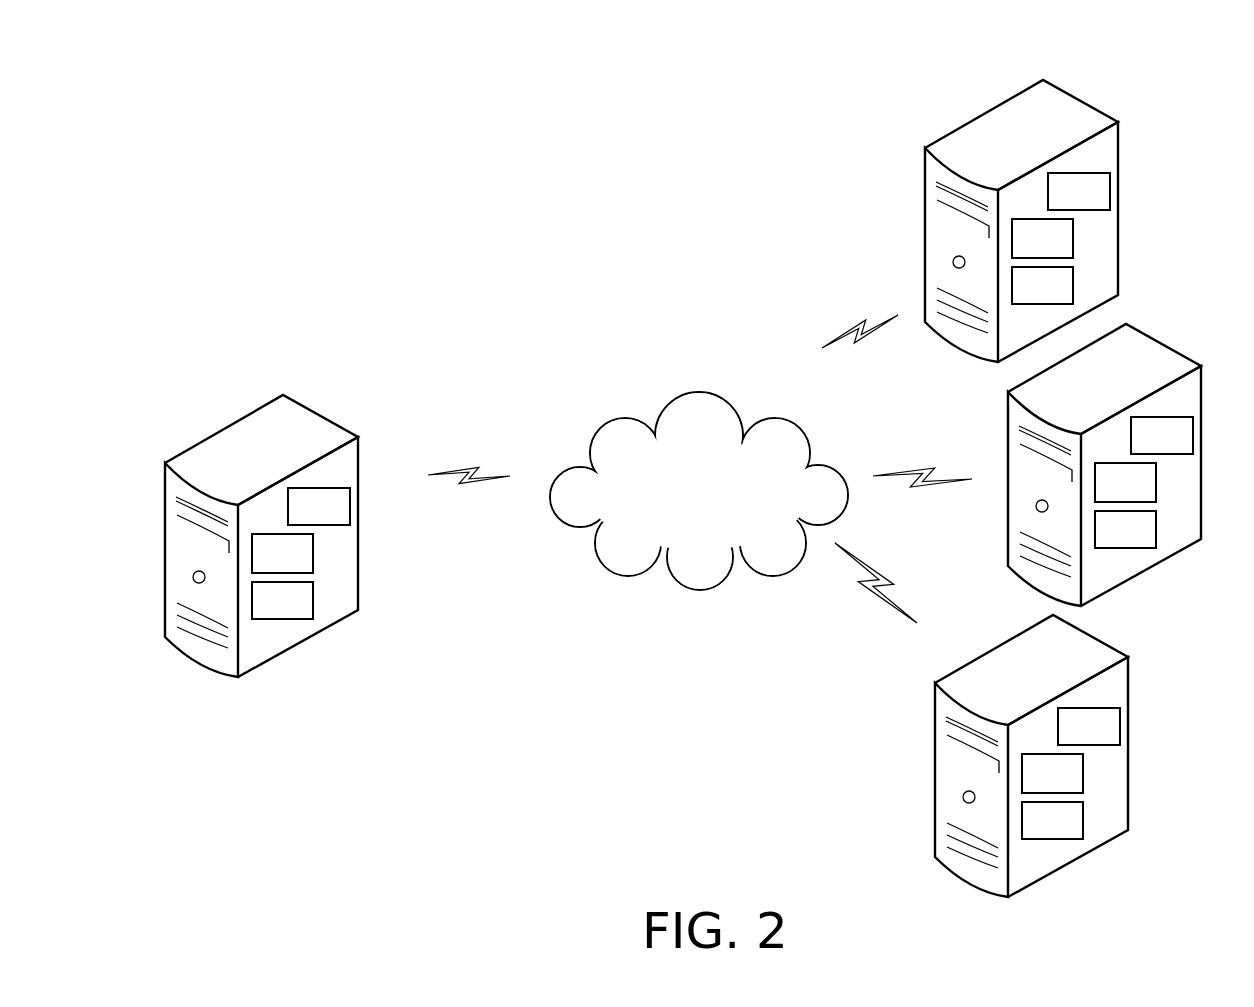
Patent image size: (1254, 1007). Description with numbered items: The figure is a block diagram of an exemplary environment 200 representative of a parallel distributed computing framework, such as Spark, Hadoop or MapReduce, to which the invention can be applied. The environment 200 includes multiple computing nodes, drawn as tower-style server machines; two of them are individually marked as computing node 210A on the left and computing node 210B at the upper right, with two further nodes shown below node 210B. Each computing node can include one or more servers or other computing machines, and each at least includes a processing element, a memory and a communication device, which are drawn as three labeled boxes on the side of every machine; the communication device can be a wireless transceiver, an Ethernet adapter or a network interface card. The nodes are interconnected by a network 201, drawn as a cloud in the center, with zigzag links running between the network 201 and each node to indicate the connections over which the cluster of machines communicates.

The environment 200 is at (183, 61).
The network 201 is at (672, 521).
The server computer 210A is at (222, 326).
The server computer 210B is at (1124, 63).